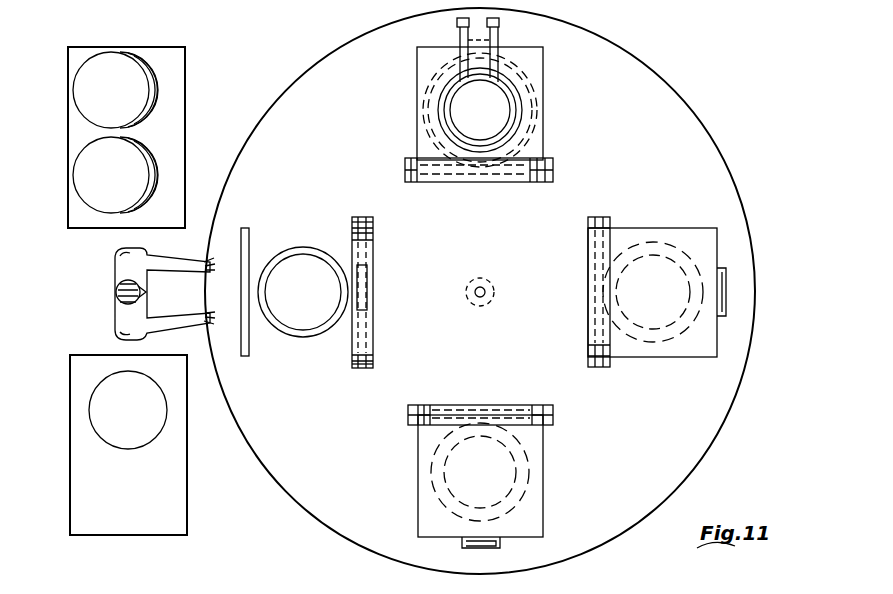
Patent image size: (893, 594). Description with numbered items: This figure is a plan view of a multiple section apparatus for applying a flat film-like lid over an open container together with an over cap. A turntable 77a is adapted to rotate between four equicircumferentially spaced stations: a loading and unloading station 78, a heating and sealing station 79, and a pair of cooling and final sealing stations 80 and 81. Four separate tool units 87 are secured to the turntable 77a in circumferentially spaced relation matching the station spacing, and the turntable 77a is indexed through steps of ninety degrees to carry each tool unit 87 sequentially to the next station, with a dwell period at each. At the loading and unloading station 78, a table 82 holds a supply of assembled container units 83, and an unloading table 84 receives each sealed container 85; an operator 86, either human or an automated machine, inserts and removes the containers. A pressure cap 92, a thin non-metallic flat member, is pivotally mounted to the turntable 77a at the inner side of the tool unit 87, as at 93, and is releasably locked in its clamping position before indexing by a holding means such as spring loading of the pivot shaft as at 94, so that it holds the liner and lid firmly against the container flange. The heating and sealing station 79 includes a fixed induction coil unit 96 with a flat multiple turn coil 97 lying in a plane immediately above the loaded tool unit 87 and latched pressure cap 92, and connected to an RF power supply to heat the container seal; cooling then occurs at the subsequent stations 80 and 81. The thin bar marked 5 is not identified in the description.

The turntable 77a is at (700, 464).
The table 82 is at (173, 50).
The assembled container units 83 is at (164, 164).
The operator 86 is at (118, 288).
The sealed container 85 is at (90, 418).
The unloading table 84 is at (73, 496).
The spring loading of the pivot shaft 94 is at (374, 232).
The pivotal mounting 93 is at (351, 358).
The loading and unloading station 78 is at (300, 235).
The bar 5 is at (246, 356).
The tool unit 87 is at (303, 364).
The heating and sealing station 79 is at (344, 139).
The pressure cap 92 is at (545, 111).
The flat multiple turn coil 97 is at (528, 136).
The induction coil unit 96 is at (524, 80).
The cooling and final sealing station 80 is at (648, 358).
The cooling and final sealing station 81 is at (543, 495).